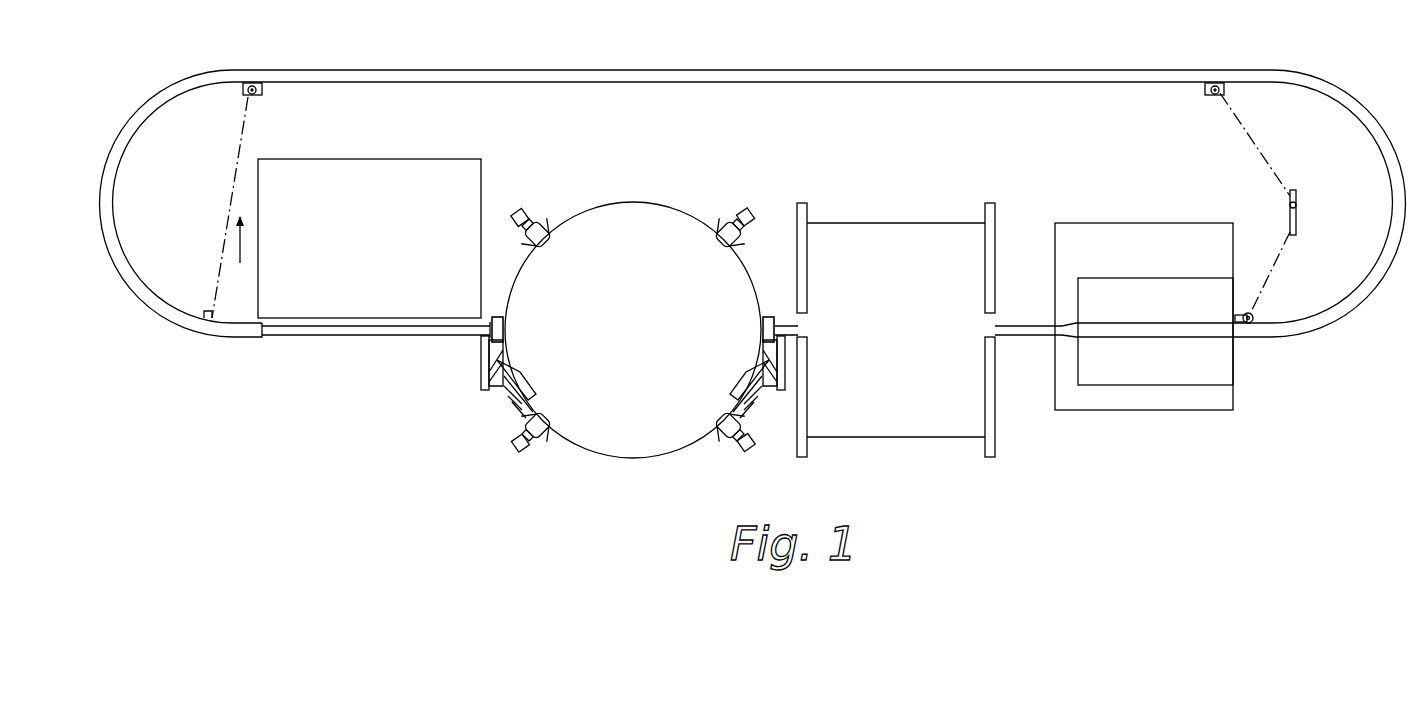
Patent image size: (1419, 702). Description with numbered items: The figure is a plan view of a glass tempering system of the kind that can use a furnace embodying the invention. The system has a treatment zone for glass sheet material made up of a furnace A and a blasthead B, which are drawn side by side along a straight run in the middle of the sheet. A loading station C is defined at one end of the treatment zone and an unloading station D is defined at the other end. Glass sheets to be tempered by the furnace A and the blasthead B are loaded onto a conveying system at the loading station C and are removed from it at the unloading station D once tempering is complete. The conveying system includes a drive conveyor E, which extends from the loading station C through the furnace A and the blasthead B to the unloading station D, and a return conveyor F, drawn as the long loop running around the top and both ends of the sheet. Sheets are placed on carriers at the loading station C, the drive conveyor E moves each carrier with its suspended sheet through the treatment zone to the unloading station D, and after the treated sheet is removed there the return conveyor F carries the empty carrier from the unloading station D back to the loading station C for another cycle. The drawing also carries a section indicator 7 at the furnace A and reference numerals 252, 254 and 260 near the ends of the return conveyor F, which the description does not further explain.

The return conveyor F is at (535, 68).
The drive conveyor E is at (345, 340).
The loading station C is at (461, 158).
The furnace A is at (629, 458).
The blasthead B is at (935, 440).
The unloading station D is at (1163, 228).
The section line 7- 7 is at (515, 252).
The pulley 254 is at (260, 96).
The belt 252 is at (237, 172).
The direction arrow 260 is at (238, 238).